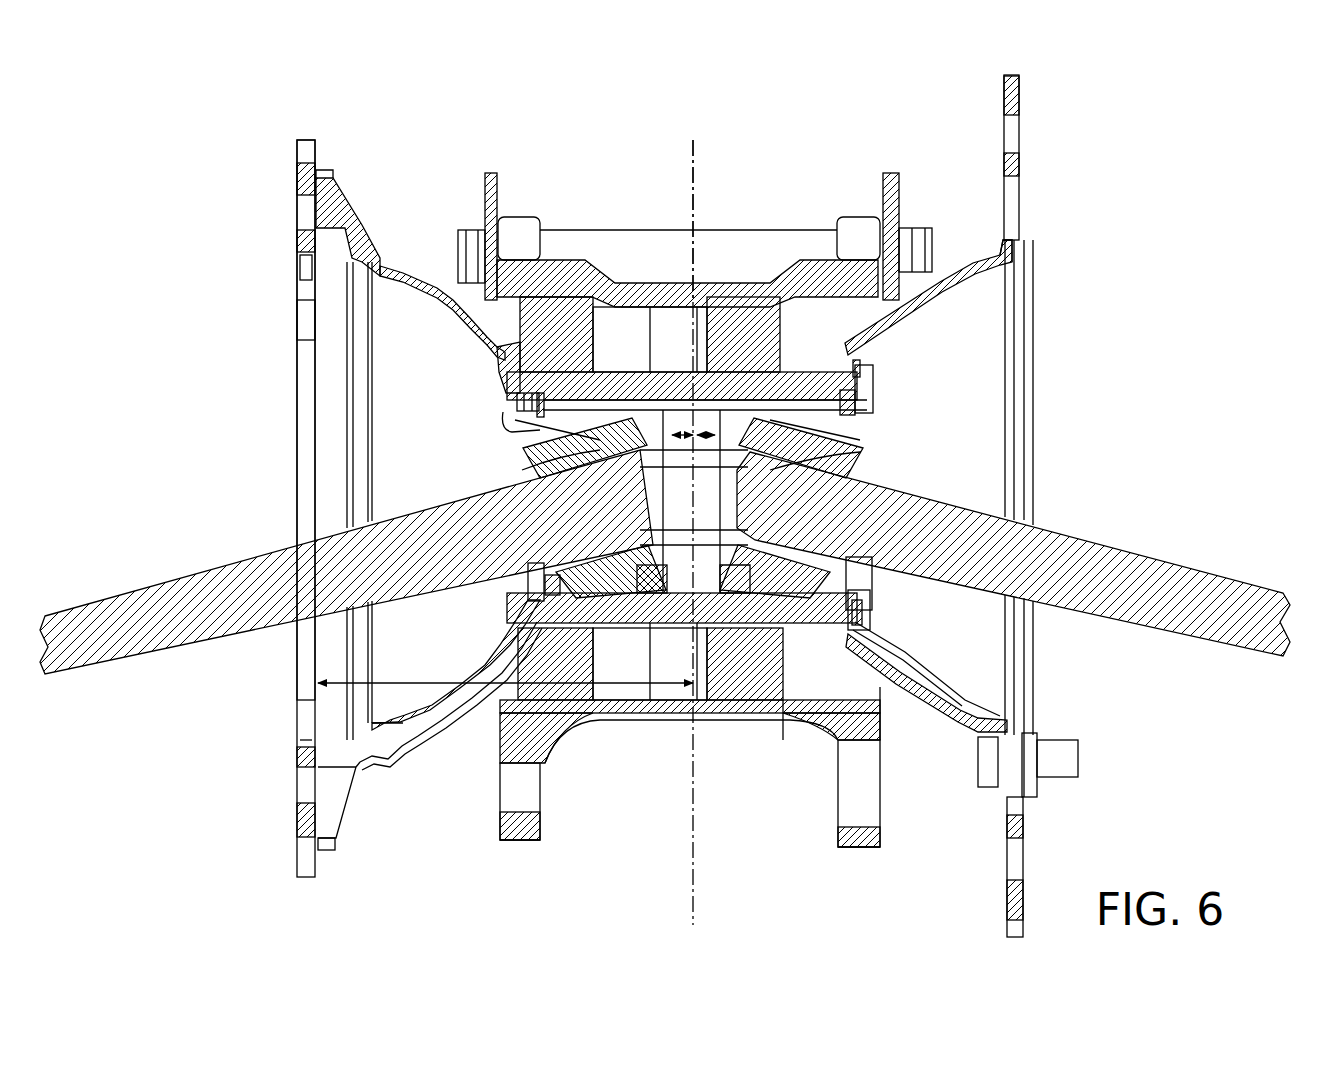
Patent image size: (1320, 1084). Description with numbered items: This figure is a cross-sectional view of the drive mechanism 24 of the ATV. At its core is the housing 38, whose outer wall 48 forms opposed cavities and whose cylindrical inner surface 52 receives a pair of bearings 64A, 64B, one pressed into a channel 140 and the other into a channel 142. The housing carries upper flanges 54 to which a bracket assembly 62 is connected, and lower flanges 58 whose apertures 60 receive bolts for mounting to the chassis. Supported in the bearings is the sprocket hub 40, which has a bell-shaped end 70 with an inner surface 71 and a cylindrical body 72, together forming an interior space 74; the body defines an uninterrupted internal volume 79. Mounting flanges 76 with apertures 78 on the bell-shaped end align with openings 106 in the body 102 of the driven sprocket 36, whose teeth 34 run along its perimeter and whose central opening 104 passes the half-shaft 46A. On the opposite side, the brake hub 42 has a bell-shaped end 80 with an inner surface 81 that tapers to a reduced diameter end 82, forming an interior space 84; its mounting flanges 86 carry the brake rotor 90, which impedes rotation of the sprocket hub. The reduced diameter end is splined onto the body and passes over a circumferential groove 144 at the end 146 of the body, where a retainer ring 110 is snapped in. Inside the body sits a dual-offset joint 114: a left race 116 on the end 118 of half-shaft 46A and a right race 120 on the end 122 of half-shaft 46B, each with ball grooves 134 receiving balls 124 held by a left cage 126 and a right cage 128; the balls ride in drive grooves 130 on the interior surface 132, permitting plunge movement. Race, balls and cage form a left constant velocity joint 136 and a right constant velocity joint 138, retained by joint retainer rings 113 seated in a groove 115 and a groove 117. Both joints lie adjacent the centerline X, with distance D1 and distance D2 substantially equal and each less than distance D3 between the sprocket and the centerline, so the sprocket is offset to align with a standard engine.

The drive mechanism 24 is at (722, 130).
The teeth 34 is at (300, 872).
The driven sprocket 36 is at (302, 138).
The housing 38 is at (680, 752).
The sprocket hub 40 is at (417, 745).
The brake hub 42 is at (935, 735).
The half-shaft 46A is at (265, 600).
The half-shaft 46B is at (1105, 584).
The outer wall 48 is at (660, 722).
The inner surface 52 is at (805, 700).
The upper flanges 54 is at (513, 215).
The lower flanges 58 is at (515, 842).
The apertures 60 is at (508, 797).
The bracket assembly 62 is at (489, 172).
The bearing 64A is at (553, 298).
The bearing 64B is at (738, 298).
The bell-shaped end 70 is at (404, 270).
The inner surface 71 is at (360, 445).
The body 72 is at (614, 376).
The interior space 74 is at (558, 562).
The mounting flanges 76 is at (325, 178).
The apertures 78 is at (340, 200).
The internal volume 79 is at (668, 592).
The bell-shaped end 80 is at (978, 742).
The inner surface 81 is at (1010, 472).
The reduced diameter end 82 is at (790, 638).
The interior space 84 is at (1002, 368).
The mounting flanges 86 is at (1030, 797).
The brake rotor 90 is at (1021, 92).
The body 102 is at (295, 325).
The central opening 104 is at (340, 718).
The openings 106 is at (300, 208).
The retainer ring 110 is at (872, 392).
The joint retainer rings 113 is at (540, 386).
The dual-offset joint 114 is at (915, 365).
The groove 115 is at (515, 408).
The left race 116 is at (522, 455).
The groove 117 is at (875, 612).
The end 118 is at (560, 485).
The right race 120 is at (862, 458).
The end 122 is at (797, 630).
The balls 124 is at (530, 638).
The left cage 126 is at (600, 420).
The right cage 128 is at (778, 398).
The drive grooves 130 is at (870, 400).
The interior surface 132 is at (862, 582).
The ball grooves 134 is at (540, 580).
The left constant velocity joint 136 is at (650, 600).
The right constant velocity joint 138 is at (748, 388).
The channel 140 is at (595, 270).
The channel 142 is at (720, 395).
The circumferential groove 144 is at (870, 632).
The end 146 is at (880, 432).
The distance D1 is at (670, 440).
The distance D2 is at (715, 445).
The distance D3 is at (332, 682).
The centerline X is at (700, 890).